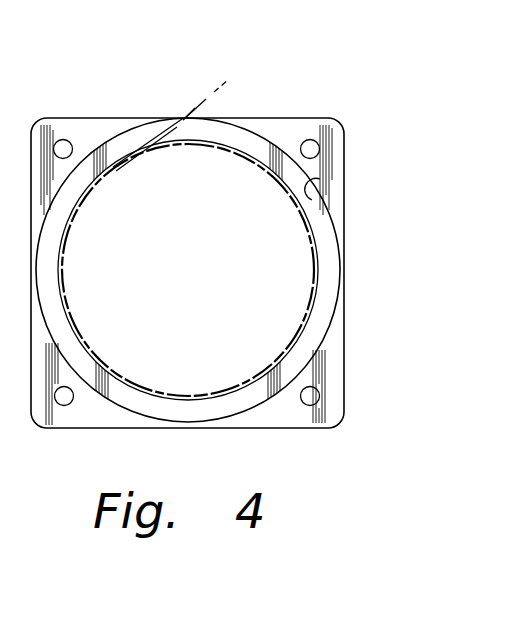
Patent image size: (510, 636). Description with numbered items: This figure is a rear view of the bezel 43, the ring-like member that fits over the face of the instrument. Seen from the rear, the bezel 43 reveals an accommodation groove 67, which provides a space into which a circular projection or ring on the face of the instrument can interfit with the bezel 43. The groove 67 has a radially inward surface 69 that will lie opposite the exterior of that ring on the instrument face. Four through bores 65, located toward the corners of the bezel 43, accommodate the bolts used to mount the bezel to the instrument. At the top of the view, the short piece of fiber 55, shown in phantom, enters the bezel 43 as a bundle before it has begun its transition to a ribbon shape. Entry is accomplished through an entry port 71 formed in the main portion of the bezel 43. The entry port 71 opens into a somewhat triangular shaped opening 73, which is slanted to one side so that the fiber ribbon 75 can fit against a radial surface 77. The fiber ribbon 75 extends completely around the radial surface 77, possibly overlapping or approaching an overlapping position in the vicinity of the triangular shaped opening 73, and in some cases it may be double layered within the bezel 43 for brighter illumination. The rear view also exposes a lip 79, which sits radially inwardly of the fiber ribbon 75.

The bezel 43 is at (117, 127).
The short piece of fiber 55 is at (200, 98).
The through bores 65 is at (63, 148).
The accommodation groove 67 is at (315, 222).
The radially inward surface 69 is at (318, 192).
The entry port 71 is at (197, 110).
The triangular shaped opening 73 is at (183, 121).
The fiber ribbon 75 is at (182, 120).
The radial surface 77 is at (64, 281).
The lip 79 is at (249, 379).